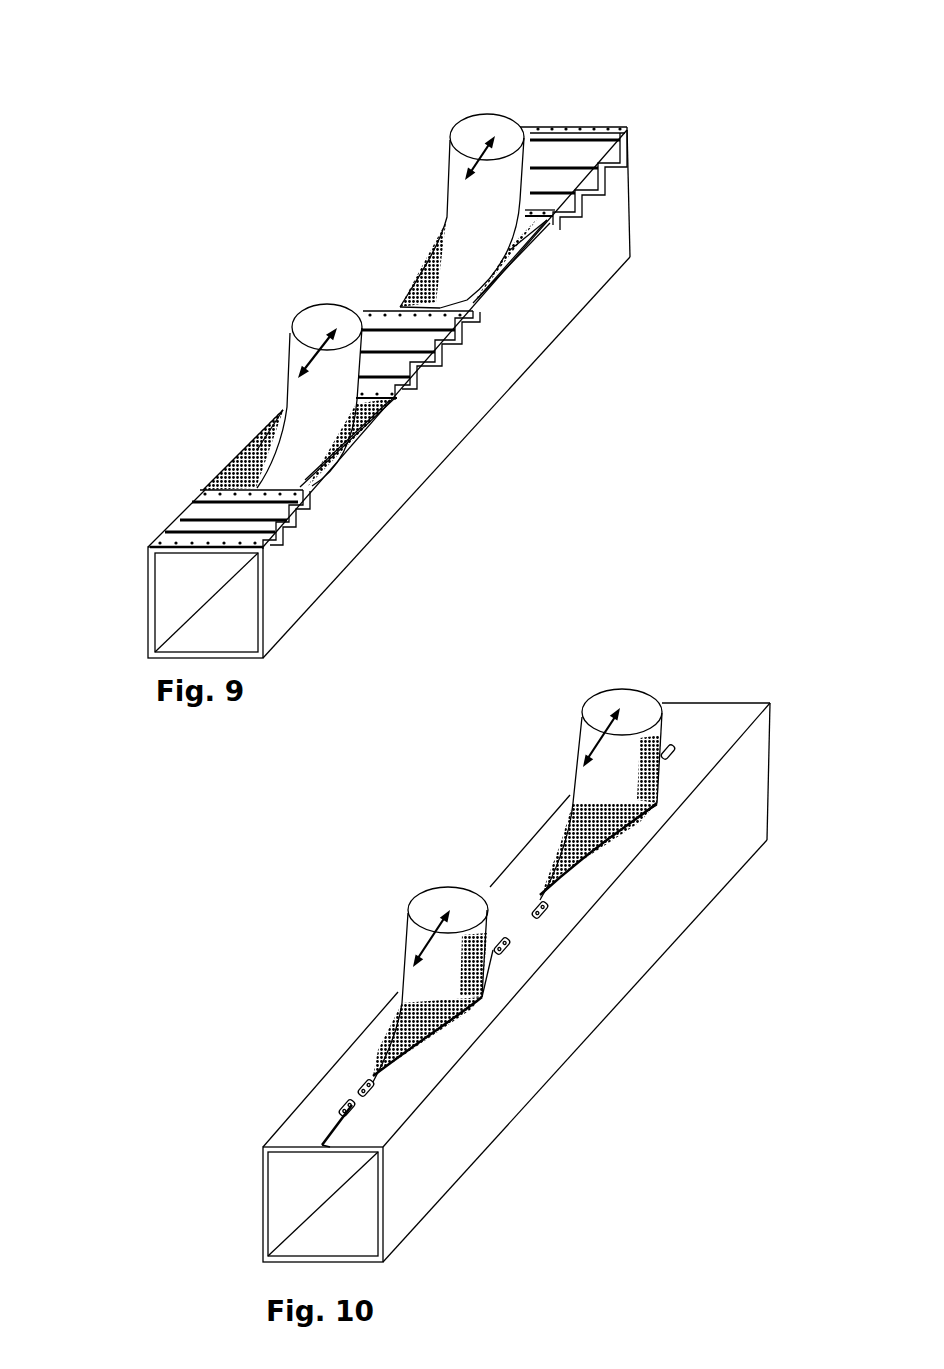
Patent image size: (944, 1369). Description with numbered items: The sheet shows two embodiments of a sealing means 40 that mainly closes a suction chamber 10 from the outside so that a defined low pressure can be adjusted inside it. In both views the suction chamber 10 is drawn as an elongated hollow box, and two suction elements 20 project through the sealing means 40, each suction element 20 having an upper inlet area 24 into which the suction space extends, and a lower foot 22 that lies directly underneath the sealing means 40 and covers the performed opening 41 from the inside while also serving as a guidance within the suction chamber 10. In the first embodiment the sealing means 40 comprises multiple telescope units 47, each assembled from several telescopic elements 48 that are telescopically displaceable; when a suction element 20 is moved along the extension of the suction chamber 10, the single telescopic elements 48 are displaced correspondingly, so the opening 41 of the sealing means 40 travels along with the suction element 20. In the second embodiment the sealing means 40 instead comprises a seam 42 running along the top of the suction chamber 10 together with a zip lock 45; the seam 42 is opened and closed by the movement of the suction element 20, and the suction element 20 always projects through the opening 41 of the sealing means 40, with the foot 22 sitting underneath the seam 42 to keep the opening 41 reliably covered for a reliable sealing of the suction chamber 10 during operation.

In FIG. 10, the suction chamber 10 is at (435, 1173).
In FIG. 9, the suction element 20 is at (445, 193).
In FIG. 10, the suction element 20 is at (573, 778).
In FIG. 9, the foot 22 is at (413, 267).
In FIG. 9, the inlet area 24 is at (468, 128).
In FIG. 10, the inlet area 24 is at (592, 707).
In FIG. 9, the sealing means 40 is at (389, 392).
In FIG. 10, the sealing means 40 is at (450, 1047).
In FIG. 9, the opening 41 is at (525, 232).
In FIG. 10, the opening 41 is at (583, 838).
In FIG. 10, the seam 42 is at (320, 1160).
In FIG. 10, the zip lock 45 is at (493, 935).
In FIG. 9, the telescope unit 47 is at (343, 445).
In FIG. 9, the telescopic element 48 is at (385, 385).